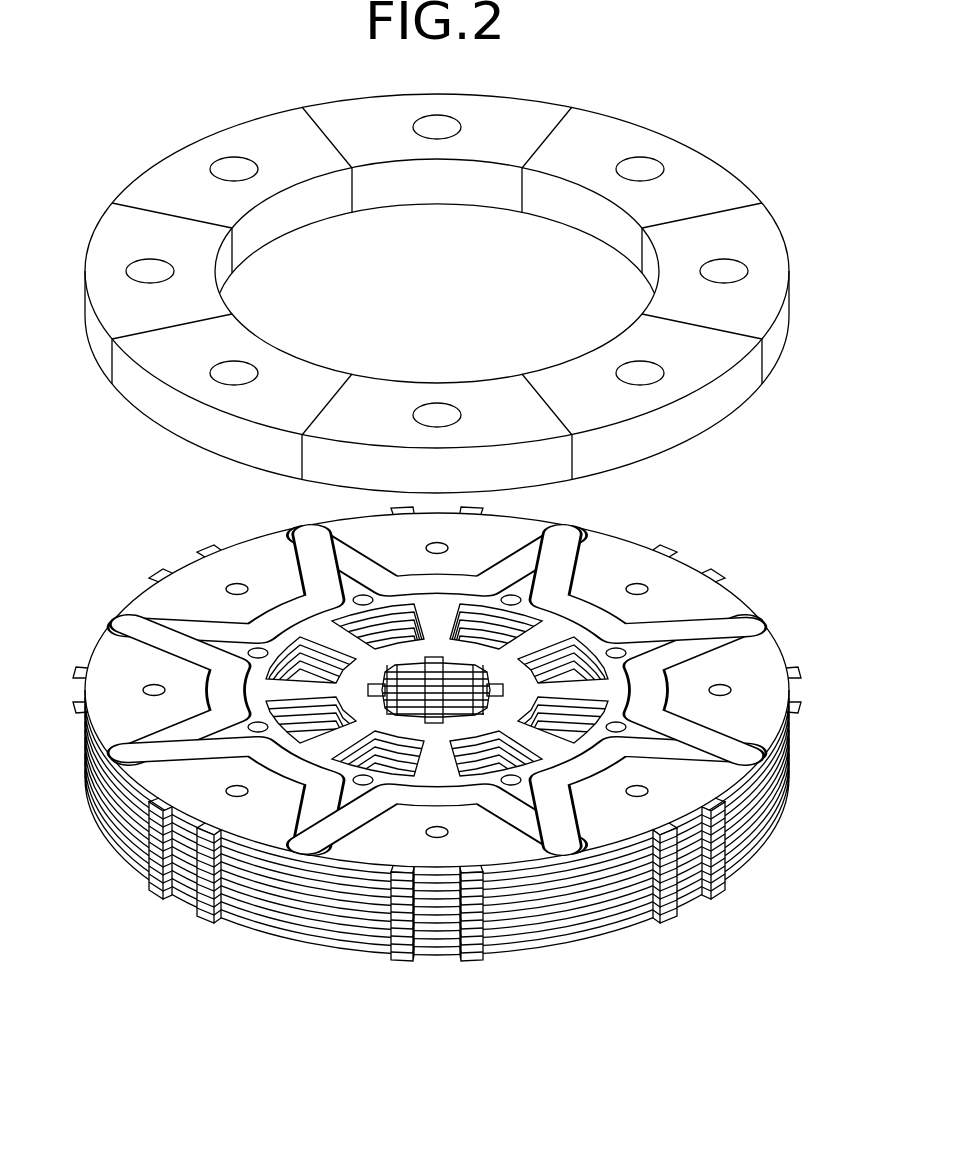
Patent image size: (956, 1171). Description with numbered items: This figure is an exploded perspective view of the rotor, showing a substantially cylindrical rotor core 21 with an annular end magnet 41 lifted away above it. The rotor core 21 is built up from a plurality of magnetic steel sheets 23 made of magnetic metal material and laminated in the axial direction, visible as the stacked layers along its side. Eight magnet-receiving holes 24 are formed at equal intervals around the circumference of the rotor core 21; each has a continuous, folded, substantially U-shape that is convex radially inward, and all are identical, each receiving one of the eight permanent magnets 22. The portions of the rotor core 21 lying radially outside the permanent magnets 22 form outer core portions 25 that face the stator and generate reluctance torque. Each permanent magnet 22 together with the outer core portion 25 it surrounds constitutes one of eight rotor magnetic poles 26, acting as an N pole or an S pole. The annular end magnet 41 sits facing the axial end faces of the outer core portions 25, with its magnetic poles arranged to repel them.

The annular end magnet 41 is at (688, 160).
The rotor core 21 is at (604, 933).
The permanent magnets 22 is at (183, 625).
The magnetic steel sheets 23 is at (367, 936).
The magnet-receiving holes 24 is at (152, 627).
The outer core portions 25 is at (645, 582).
The rotor magnetic poles 26 is at (787, 693).